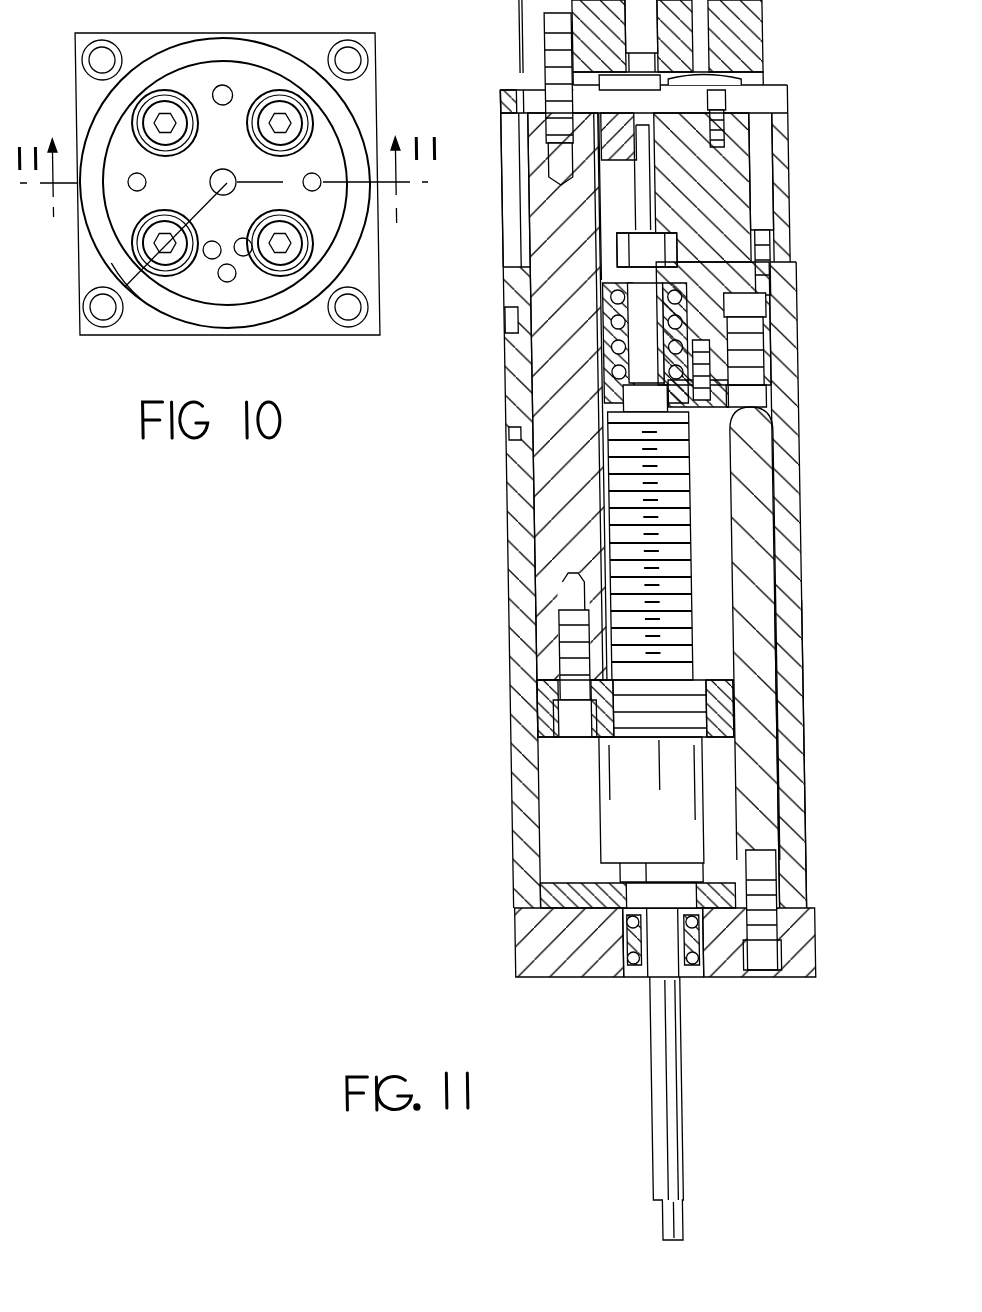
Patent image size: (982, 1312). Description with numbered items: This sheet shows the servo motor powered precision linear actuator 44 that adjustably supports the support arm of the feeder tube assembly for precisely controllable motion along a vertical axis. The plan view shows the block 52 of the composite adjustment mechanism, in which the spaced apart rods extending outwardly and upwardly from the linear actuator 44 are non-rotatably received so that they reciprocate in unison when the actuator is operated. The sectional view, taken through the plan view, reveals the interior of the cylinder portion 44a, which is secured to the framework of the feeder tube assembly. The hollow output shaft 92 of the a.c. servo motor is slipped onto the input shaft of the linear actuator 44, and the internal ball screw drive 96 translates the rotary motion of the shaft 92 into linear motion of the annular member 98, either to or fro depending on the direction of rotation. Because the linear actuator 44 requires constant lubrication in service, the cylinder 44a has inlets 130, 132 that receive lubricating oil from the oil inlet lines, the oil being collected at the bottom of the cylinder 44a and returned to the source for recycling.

In FIG. 10, the linear actuator 44 is at (78, 263).
In FIG. 11, the linear actuator 44 is at (506, 547).
In FIG. 11, the cylinder portion 44a is at (798, 783).
In FIG. 10, the block 52 is at (322, 147).
In FIG. 11, the block 52 is at (771, 22).
In FIG. 11, the output shaft 92 is at (658, 1043).
In FIG. 11, the ball screw drive 96 is at (727, 292).
In FIG. 11, the annular member 98 is at (544, 243).
In FIG. 11, the inlet 130 is at (505, 323).
In FIG. 11, the inlet 132 is at (507, 433).